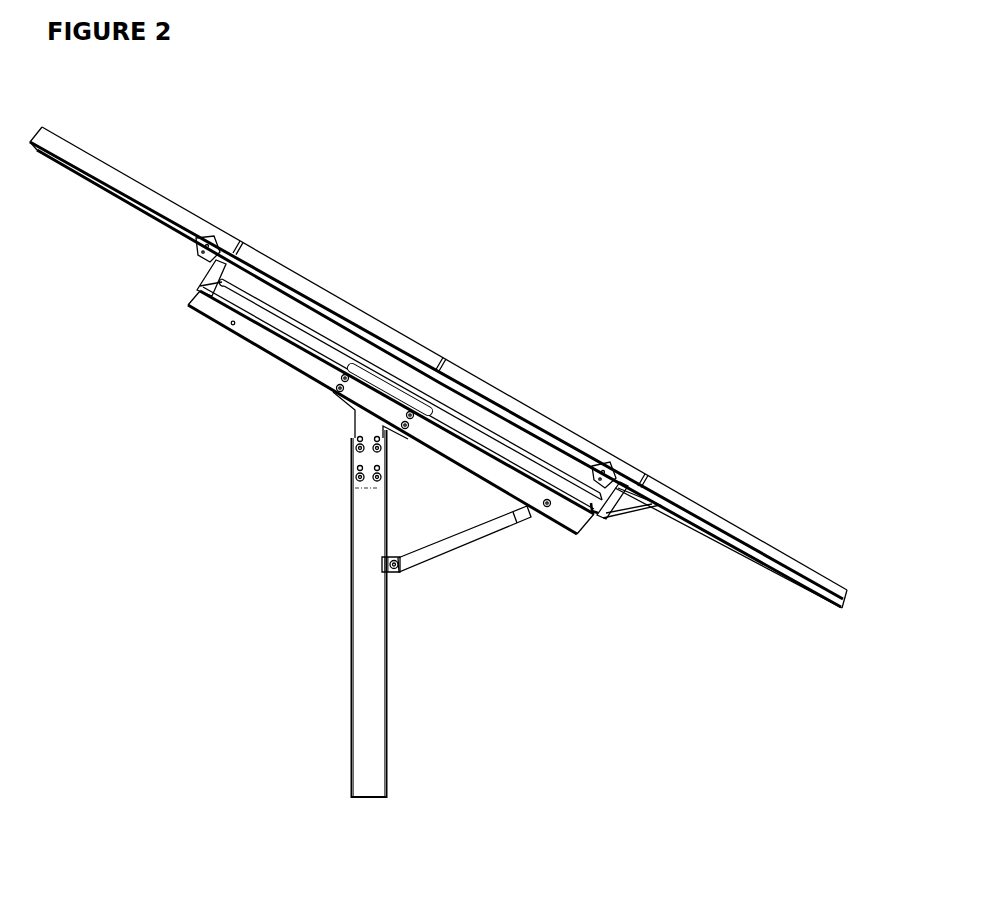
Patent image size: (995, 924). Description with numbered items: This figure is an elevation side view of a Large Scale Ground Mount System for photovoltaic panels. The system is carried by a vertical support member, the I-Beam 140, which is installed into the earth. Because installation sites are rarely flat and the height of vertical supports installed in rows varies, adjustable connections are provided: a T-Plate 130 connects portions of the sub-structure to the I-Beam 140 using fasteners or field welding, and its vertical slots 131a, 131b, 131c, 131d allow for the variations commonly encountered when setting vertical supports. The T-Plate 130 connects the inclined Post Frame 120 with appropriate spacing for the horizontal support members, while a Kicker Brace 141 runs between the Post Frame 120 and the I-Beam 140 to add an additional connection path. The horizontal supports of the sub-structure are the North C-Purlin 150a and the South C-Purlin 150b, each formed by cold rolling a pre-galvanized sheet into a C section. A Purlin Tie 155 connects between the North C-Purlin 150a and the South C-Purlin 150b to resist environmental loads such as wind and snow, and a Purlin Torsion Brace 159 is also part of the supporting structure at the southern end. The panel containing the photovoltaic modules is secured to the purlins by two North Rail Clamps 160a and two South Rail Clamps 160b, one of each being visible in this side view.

The Post Frame 120 is at (249, 342).
The T-Plate 130 is at (331, 391).
The vertical slot 131a is at (380, 453).
The vertical slot 131b is at (380, 481).
The vertical slot 131c is at (358, 481).
The vertical slot 131d is at (356, 452).
The I-Beam 140 is at (351, 668).
The Kicker Brace 141 is at (463, 542).
The North C-Purlin 150a is at (200, 284).
The South C-Purlin 150b is at (603, 518).
The Purlin Tie 155 is at (245, 288).
The Purlin Torsion Brace 159 is at (643, 512).
The North Rail Clamp 160a is at (197, 243).
The South Rail Clamp 160b is at (594, 465).